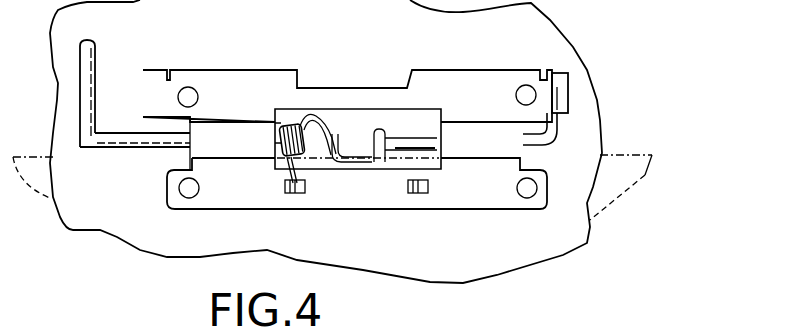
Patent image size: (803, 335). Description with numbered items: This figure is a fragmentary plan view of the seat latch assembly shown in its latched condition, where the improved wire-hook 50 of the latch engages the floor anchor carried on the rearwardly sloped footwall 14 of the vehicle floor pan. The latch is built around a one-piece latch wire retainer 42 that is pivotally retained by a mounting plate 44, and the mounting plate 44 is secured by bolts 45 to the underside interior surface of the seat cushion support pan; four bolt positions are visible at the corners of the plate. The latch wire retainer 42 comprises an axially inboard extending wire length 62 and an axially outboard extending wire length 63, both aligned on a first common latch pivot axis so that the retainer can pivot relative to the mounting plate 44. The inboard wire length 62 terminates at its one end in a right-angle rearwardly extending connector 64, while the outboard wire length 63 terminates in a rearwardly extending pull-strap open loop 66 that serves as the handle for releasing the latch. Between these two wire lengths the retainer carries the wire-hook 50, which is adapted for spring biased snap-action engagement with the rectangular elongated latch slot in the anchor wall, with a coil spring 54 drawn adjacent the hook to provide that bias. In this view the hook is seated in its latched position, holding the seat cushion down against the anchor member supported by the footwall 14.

The rearwardly sloped footwall 14 is at (645, 175).
The one-piece latch wire retainer 42 is at (393, 142).
The mounting plate 44 is at (485, 68).
The bolts 45 is at (190, 89).
The wire-hook 50 is at (353, 144).
The spring 54 is at (293, 118).
The inboard extending wire length 62 is at (415, 145).
The outboard extending wire length 63 is at (137, 150).
The right-angle rearwardly extending connector 64 is at (555, 100).
The pull-strap open loop 66 is at (93, 73).